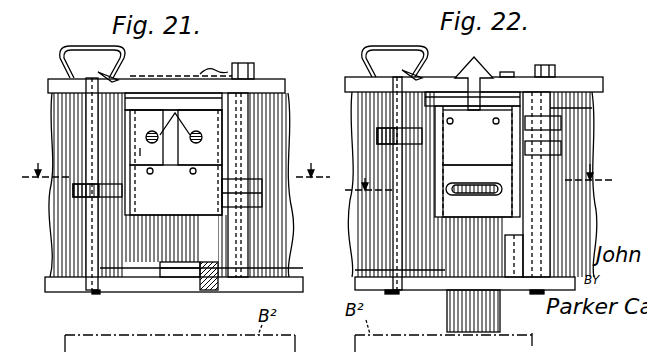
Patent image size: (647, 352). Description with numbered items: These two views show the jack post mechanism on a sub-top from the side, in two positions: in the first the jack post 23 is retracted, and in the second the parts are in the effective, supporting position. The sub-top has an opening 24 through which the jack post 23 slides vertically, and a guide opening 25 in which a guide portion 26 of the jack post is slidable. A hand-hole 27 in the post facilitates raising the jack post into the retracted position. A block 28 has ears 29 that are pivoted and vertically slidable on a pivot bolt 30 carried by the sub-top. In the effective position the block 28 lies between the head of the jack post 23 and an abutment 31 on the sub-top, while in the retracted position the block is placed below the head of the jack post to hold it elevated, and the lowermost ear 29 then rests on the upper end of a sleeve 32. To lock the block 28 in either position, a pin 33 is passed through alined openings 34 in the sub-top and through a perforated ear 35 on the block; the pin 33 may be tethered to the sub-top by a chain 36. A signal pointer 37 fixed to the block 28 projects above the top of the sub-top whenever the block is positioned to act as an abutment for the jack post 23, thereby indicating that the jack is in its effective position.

In FIG. 21, the jack post 23 is at (166, 262).
In FIG. 22, the jack post 23 is at (490, 312).
In FIG. 21, the opening 24 is at (185, 312).
In FIG. 22, the opening 24 is at (445, 282).
In FIG. 21, the guide opening 25 is at (132, 248).
In FIG. 22, the guide opening 25 is at (508, 272).
In FIG. 21, the guide portion 26 is at (140, 152).
In FIG. 22, the guide portion 26 is at (430, 182).
In FIG. 21, the hand-hole 27 is at (203, 137).
In FIG. 22, the hand-hole 27 is at (512, 184).
In FIG. 21, the block 28 is at (173, 162).
In FIG. 22, the block 28 is at (477, 161).
In FIG. 21, the ears 29 is at (252, 180).
In FIG. 22, the ears 29 is at (563, 136).
In FIG. 22, the pivot bolt 30 is at (558, 110).
In FIG. 21, the abutment 31 is at (262, 93).
In FIG. 22, the abutment 31 is at (520, 96).
In FIG. 21, the sleeve 32 is at (278, 238).
In FIG. 22, the sleeve 32 is at (570, 228).
In FIG. 21, the pin 33 is at (72, 47).
In FIG. 22, the pin 33 is at (383, 47).
In FIG. 21, the alined openings 34 is at (70, 86).
In FIG. 21, the perforated ear 35 is at (75, 191).
In FIG. 22, the perforated ear 35 is at (378, 138).
In FIG. 21, the chain 36 is at (200, 70).
In FIG. 22, the chain 36 is at (535, 68).
In FIG. 21, the signal pointer 37 is at (160, 128).
In FIG. 22, the signal pointer 37 is at (490, 74).